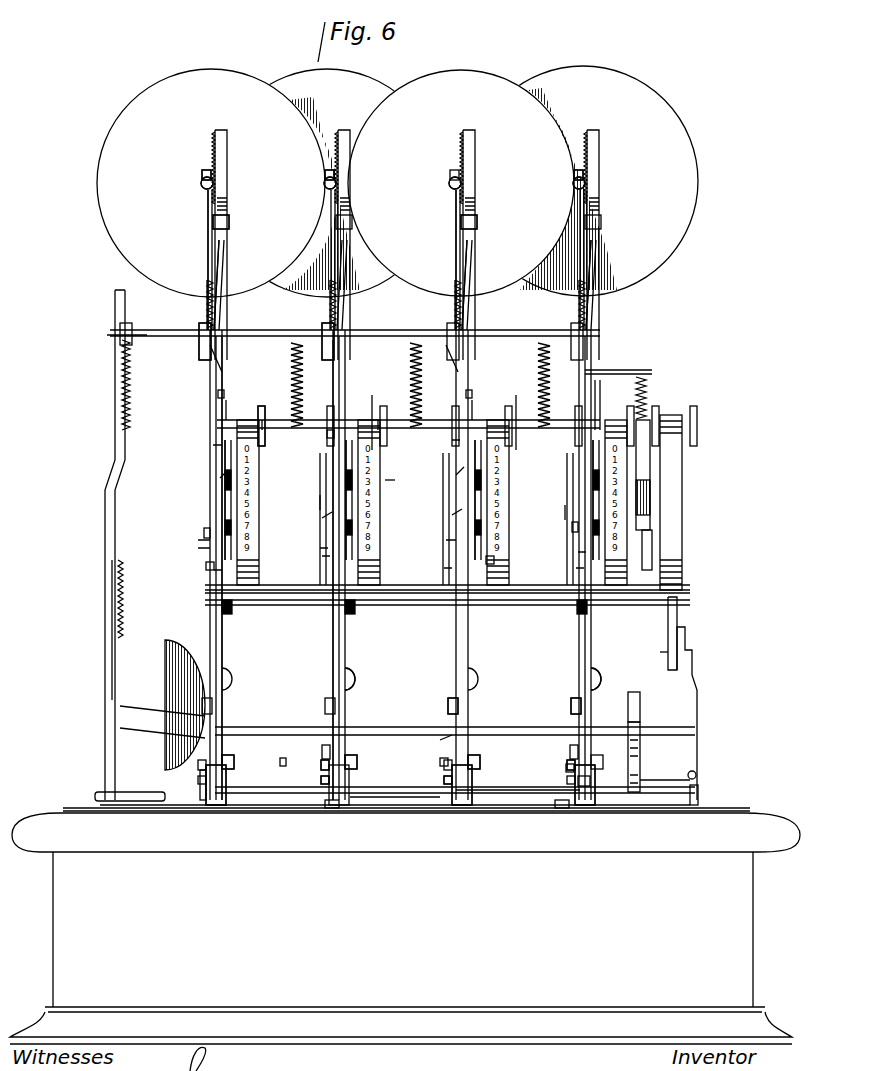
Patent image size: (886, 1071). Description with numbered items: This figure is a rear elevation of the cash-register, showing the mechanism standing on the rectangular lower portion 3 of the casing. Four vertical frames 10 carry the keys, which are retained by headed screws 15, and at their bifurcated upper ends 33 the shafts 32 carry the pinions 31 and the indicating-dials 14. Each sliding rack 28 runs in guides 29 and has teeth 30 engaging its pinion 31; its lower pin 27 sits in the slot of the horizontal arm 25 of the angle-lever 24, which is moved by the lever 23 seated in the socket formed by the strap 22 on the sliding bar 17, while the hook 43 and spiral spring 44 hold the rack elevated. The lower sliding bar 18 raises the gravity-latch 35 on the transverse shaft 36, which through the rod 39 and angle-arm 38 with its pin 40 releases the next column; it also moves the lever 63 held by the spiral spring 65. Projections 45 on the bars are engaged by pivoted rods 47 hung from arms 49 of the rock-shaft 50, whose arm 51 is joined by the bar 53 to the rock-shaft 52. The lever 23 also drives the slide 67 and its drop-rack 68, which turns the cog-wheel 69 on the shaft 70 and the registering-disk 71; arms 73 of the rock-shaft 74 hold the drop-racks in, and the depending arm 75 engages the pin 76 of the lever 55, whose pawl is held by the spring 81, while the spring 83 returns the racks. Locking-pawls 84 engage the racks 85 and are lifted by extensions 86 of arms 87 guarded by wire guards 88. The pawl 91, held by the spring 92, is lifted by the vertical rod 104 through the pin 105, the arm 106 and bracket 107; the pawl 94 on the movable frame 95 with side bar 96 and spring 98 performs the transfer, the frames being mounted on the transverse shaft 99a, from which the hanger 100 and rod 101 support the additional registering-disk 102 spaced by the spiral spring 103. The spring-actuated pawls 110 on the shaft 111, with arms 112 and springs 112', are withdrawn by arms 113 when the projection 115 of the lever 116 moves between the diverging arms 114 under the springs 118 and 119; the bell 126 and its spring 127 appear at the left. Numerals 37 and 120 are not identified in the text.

The rectangular lower portion 3 is at (405, 926).
The vertical frame 10 is at (223, 660).
The indicating-dial 14 is at (355, 60).
The headed screw 15 is at (353, 688).
The longitudinally-sliding bar 17 is at (228, 758).
The longitudinally-sliding bar 18 is at (330, 768).
The metallic strap 22 is at (490, 757).
The lever 23 is at (223, 720).
The angle-lever 24 is at (213, 450).
The horizontal arm 25 is at (248, 398).
The pin 27 is at (224, 394).
The sliding rack 28 is at (222, 372).
The guide 29 is at (230, 216).
The teeth 30 is at (228, 158).
The pinion 31 is at (205, 182).
The shaft 32 is at (214, 185).
The bifurcated upper ends 33 is at (207, 212).
The gravity-latch 35 is at (330, 778).
The transverse shaft 36 is at (418, 808).
The bar 37 is at (330, 774).
The angle-arm 38 is at (458, 808).
The rod 39 is at (516, 789).
The laterally-extending pin 40 is at (440, 740).
The lateral projection or hook 43 is at (330, 518).
The spiral spring 44 is at (320, 500).
The lateral projection 45 is at (322, 752).
The pivoted rod 47 is at (448, 710).
The arm 49 is at (330, 729).
The rock-shaft 50 is at (516, 728).
The arm 51 is at (628, 732).
The rock-shaft 52 is at (665, 774).
The bar 53 is at (641, 722).
The lever 55 is at (697, 742).
The lever 63 is at (216, 808).
The spiral spring 65 is at (200, 792).
The slide 67 is at (214, 570).
The drop-rack 68 is at (206, 566).
The cog-wheel 69 is at (220, 478).
The shaft 70 is at (258, 495).
The registering-disk 71 is at (256, 465).
The arm 73 is at (208, 592).
The rock-shaft 74 is at (408, 606).
The depending arm 75 is at (668, 620).
The laterally-extending pin 76 is at (662, 652).
The spring 81 is at (699, 792).
The spring 83 is at (697, 774).
The locking-pawl 84 is at (198, 540).
The rack 85 is at (322, 557).
The extension 86 is at (198, 548).
The arm 87 is at (350, 616).
The wire guard 88 is at (205, 530).
The pawl 91 is at (328, 434).
The spring 92 is at (386, 480).
The pawl 94 is at (522, 399).
The movable frame 95 is at (305, 424).
The side bar 96 is at (386, 399).
The spring 98 is at (312, 364).
The transverse shaft 99a is at (258, 430).
The hanger 100 is at (648, 410).
The rod 101 is at (598, 410).
The additional registering-disk 102 is at (662, 562).
The spiral spring 103 is at (650, 490).
The vertical rod 104 is at (318, 640).
The transverse pin or bar 105 is at (320, 456).
The arm 106 is at (440, 762).
The bracket 107 is at (330, 808).
The spring-actuated pawl 110 is at (217, 280).
The transverse shaft 111 is at (242, 331).
The rearwardly-extending arm 112 is at (269, 568).
The spring 112' is at (373, 305).
The arm 113 is at (214, 308).
The diverging arm 114 is at (128, 322).
The lateral projection 115 is at (116, 290).
The lever 116 is at (108, 600).
The spring 118 is at (112, 630).
The spring 119 is at (131, 405).
The lever 120 is at (597, 781).
The bell 126 is at (190, 630).
The spring 127 is at (105, 783).